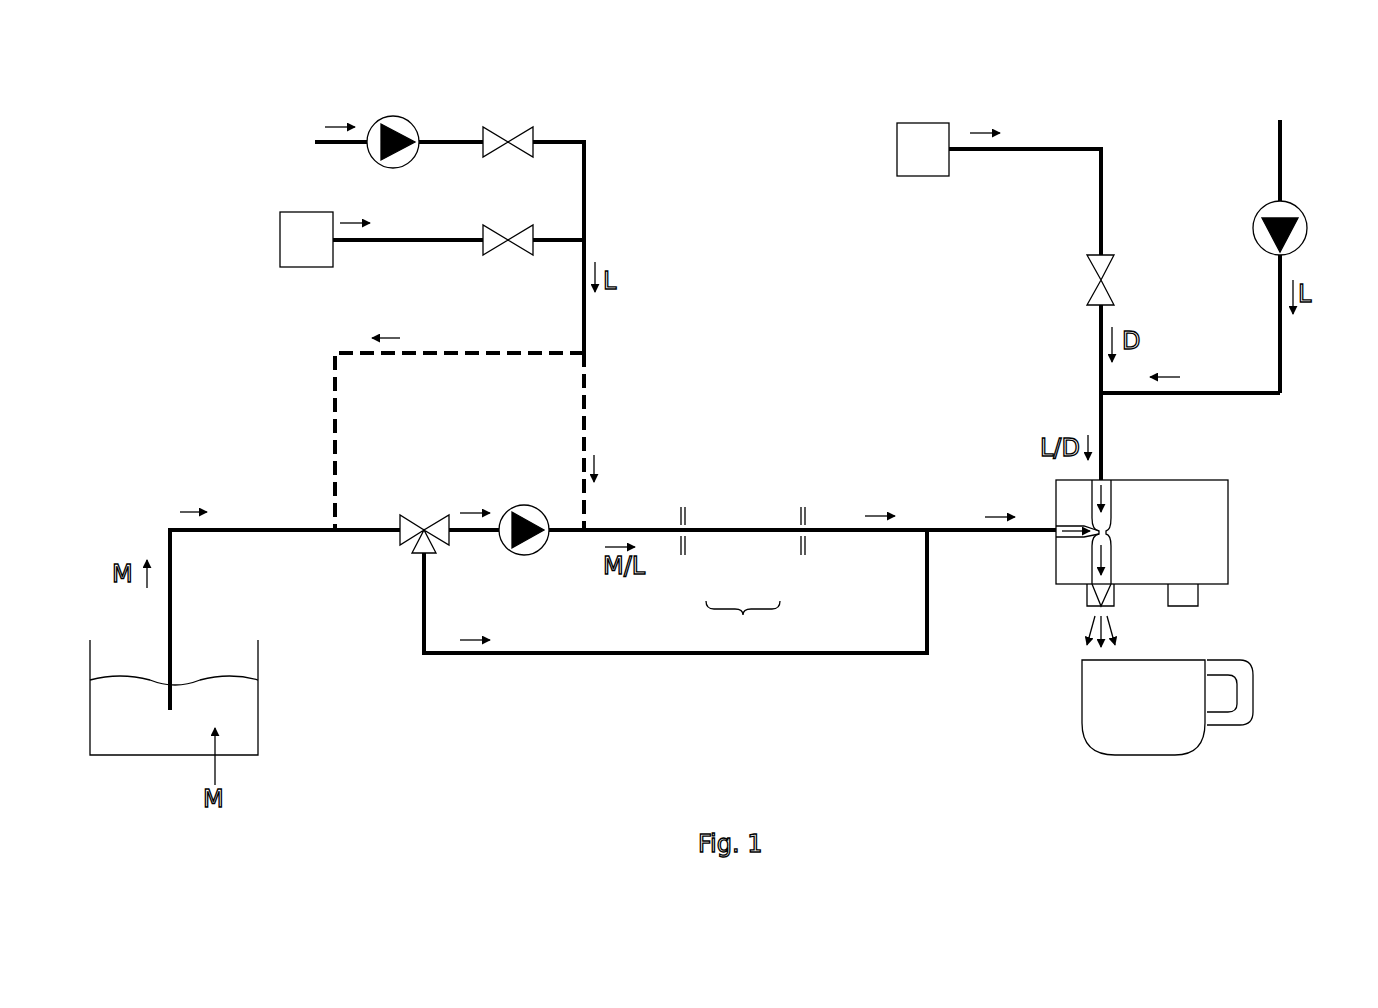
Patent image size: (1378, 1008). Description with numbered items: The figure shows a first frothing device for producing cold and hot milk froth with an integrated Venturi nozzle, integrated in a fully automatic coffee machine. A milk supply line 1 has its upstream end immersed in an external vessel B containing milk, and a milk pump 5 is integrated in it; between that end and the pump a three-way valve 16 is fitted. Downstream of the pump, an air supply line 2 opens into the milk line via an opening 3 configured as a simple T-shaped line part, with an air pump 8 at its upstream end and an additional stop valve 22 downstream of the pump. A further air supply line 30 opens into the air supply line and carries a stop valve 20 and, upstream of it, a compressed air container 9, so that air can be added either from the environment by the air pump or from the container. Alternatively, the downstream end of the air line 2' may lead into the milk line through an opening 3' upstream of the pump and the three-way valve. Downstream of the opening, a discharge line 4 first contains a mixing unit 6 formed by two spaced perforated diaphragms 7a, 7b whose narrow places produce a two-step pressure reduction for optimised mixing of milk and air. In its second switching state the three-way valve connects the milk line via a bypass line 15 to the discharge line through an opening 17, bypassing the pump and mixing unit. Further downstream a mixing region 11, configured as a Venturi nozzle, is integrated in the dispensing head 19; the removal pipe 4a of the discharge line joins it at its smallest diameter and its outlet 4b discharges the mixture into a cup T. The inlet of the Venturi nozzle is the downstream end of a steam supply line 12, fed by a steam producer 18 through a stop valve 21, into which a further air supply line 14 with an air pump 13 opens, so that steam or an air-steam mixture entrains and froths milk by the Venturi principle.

The milk supply line 1 is at (240, 526).
The air supply line 2 is at (592, 336).
The downstream end of air supply line 2' is at (459, 434).
The opening 3 is at (607, 477).
The opening 3' is at (367, 490).
The discharge line 4 is at (737, 526).
The removal pipe 4a is at (1063, 541).
The outlet of Venturi nozzle 4b is at (1113, 562).
The milk pump 5 is at (538, 551).
The mixing unit 6 is at (743, 621).
The first perforated diaphragm 7a is at (690, 554).
The second perforated diaphragm 7b is at (799, 555).
The air pump 8 is at (410, 112).
The compressed air container 9 is at (325, 239).
The mixing region 11 is at (1112, 533).
The steam supply line 12 is at (1105, 420).
The air pump 13 is at (1302, 204).
The further air supply line 14 is at (1285, 363).
The bypass line 15 is at (725, 657).
The three-way valve 16 is at (411, 555).
The opening 17 is at (932, 538).
The steam producer 18 is at (999, 189).
The dispensing head 19 is at (1232, 545).
The stop valve 20 is at (516, 256).
The stop valve 21 is at (1084, 268).
The stop valve 22 is at (517, 131).
The further air supply line 30 is at (410, 237).
The vessel B is at (87, 718).
The cup T is at (1108, 708).